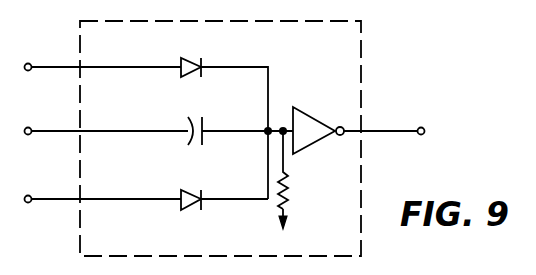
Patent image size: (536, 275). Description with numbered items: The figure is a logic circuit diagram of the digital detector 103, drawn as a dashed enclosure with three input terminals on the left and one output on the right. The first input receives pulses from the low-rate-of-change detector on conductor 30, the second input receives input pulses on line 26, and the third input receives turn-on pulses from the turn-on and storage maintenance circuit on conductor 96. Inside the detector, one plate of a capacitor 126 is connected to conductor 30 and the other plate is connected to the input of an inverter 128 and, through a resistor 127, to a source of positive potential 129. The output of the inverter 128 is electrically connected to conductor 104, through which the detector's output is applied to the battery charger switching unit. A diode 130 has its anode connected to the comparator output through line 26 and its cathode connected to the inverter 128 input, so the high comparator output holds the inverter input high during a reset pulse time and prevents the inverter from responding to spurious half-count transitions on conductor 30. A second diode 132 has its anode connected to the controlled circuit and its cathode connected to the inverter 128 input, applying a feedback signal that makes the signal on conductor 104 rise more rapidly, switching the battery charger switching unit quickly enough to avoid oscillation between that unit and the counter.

The line 26 is at (69, 66).
The conductor 30 is at (73, 130).
The conductor 96 is at (69, 198).
The digital detector 103 is at (340, 47).
The conductor 104 is at (381, 131).
The capacitor 126 is at (215, 100).
The resistor 127 is at (291, 191).
The inverter 128 is at (309, 122).
The source of positive potential 129 is at (290, 227).
The diode 130 is at (185, 58).
The second diode 132 is at (189, 209).